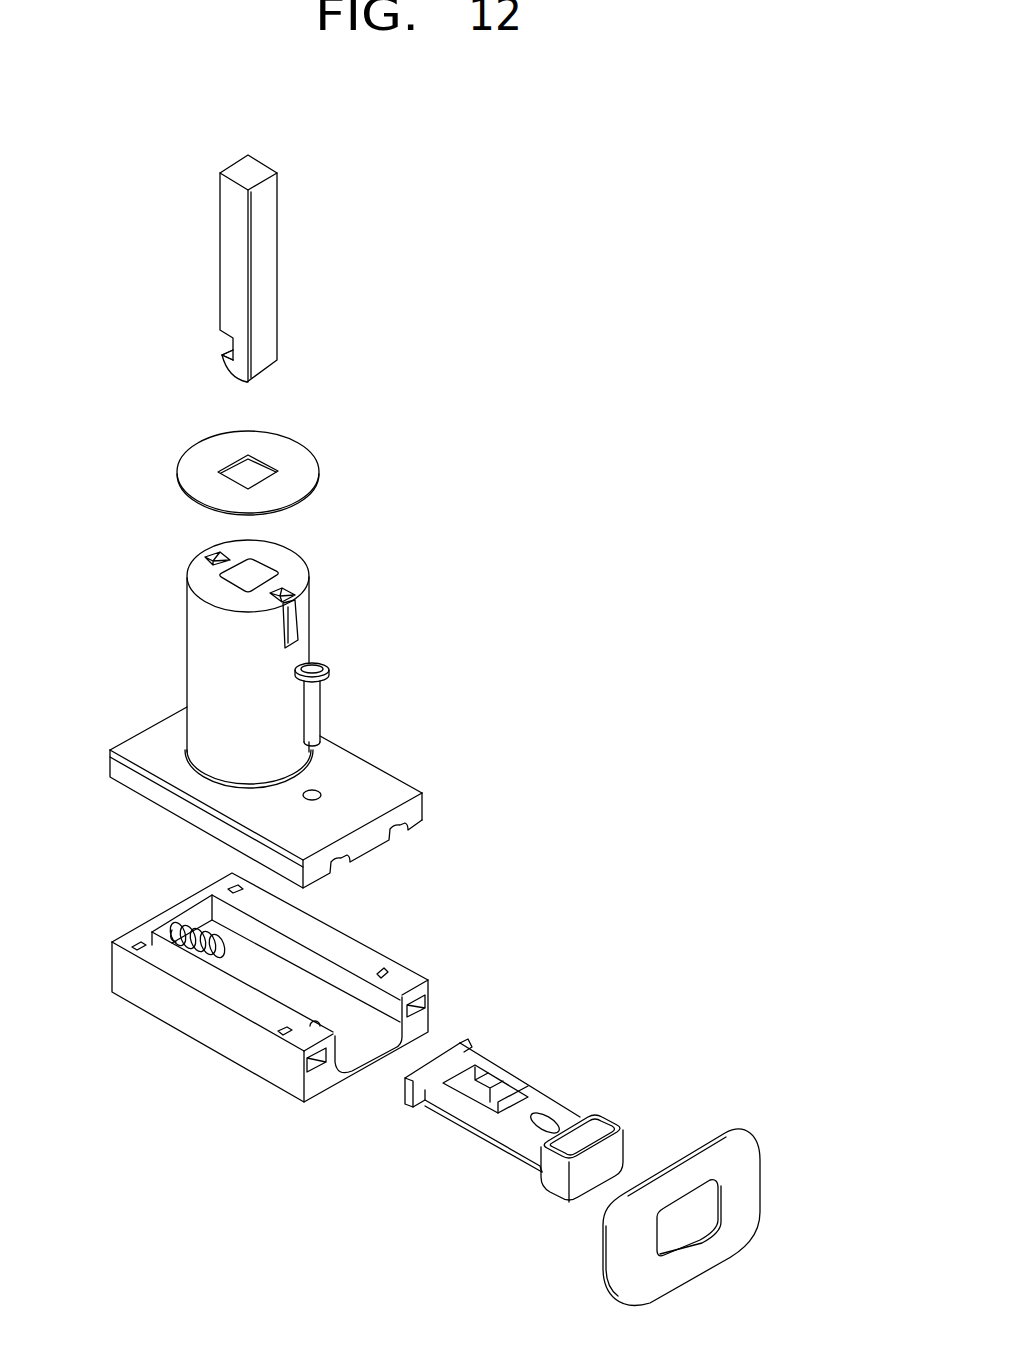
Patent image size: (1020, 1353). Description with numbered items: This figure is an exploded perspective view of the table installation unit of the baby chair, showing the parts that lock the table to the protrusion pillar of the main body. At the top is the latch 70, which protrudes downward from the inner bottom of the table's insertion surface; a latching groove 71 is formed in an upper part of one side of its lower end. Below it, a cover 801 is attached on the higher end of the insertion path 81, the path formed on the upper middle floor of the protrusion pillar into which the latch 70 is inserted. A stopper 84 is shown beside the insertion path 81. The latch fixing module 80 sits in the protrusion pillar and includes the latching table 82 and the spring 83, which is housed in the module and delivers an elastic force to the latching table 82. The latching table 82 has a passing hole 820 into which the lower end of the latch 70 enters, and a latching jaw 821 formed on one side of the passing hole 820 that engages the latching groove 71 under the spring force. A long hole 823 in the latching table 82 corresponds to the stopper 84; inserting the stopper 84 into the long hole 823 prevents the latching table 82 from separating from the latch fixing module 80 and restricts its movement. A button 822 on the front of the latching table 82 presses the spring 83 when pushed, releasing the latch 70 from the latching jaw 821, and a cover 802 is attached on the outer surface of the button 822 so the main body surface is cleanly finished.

The latch 70 is at (227, 258).
The latching groove 71 is at (218, 343).
The cover 801 is at (293, 455).
The insertion path 81 is at (260, 573).
The stopper 84 is at (315, 708).
The latch fixing module 80 is at (203, 1030).
The spring 83 is at (183, 923).
The latching table 82 is at (483, 1125).
The latching jaw 821 is at (477, 1085).
The passing hole 820 is at (510, 1092).
The long hole 823 is at (545, 1120).
The button 822 is at (617, 1147).
The cover 802 is at (698, 1260).